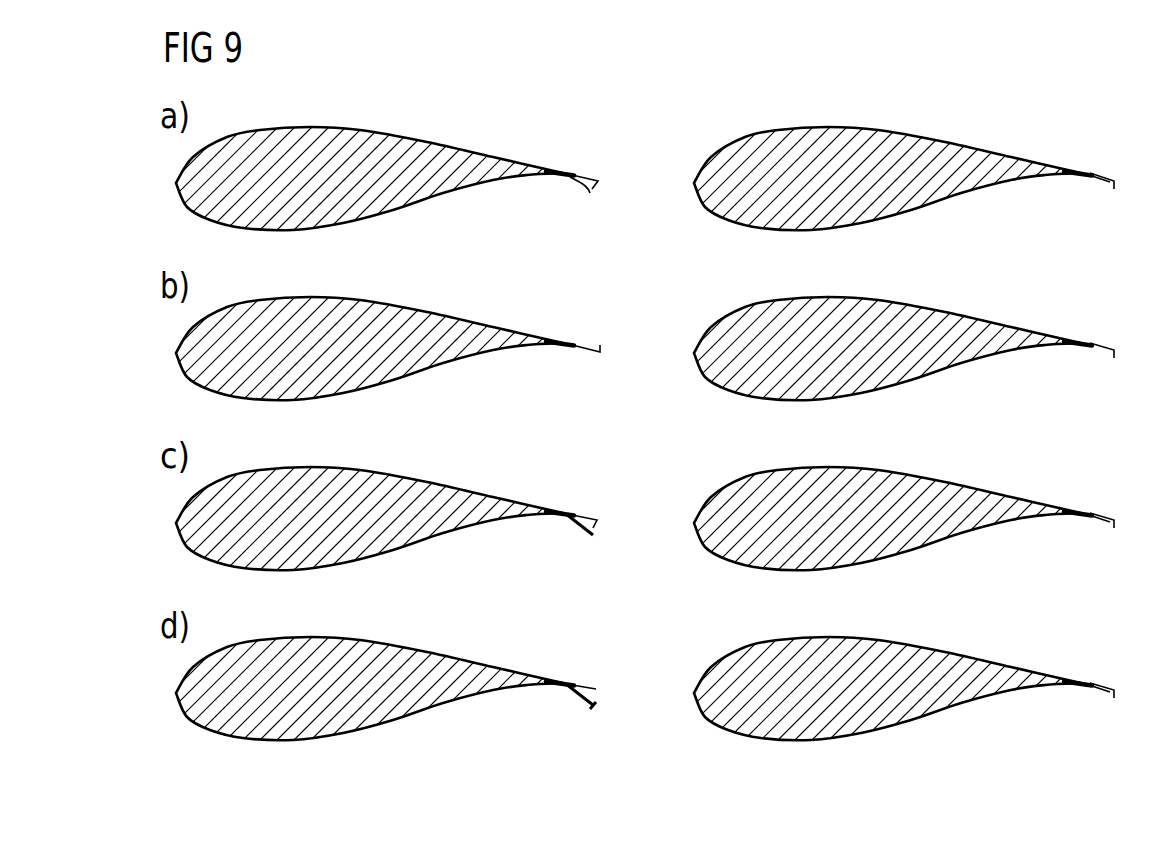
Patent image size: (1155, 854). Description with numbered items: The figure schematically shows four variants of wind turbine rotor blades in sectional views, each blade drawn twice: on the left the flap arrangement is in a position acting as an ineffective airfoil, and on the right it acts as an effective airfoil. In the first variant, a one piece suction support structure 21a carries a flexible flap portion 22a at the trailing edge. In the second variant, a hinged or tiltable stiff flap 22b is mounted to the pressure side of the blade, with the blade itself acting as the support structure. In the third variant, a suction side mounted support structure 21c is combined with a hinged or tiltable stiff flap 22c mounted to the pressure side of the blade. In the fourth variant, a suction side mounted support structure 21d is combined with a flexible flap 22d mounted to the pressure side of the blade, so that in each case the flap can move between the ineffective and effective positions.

The one piece suction support structure 21a is at (588, 172).
The flexible flap portion 22a is at (578, 188).
The hinged or tiltable stiff flap 22b is at (580, 358).
The suction side mounted support structure 21c is at (588, 514).
The hinged or tiltable stiff flap 22c is at (576, 532).
The suction side mounted support structure 21d is at (587, 684).
The flexible flap 22d is at (577, 700).